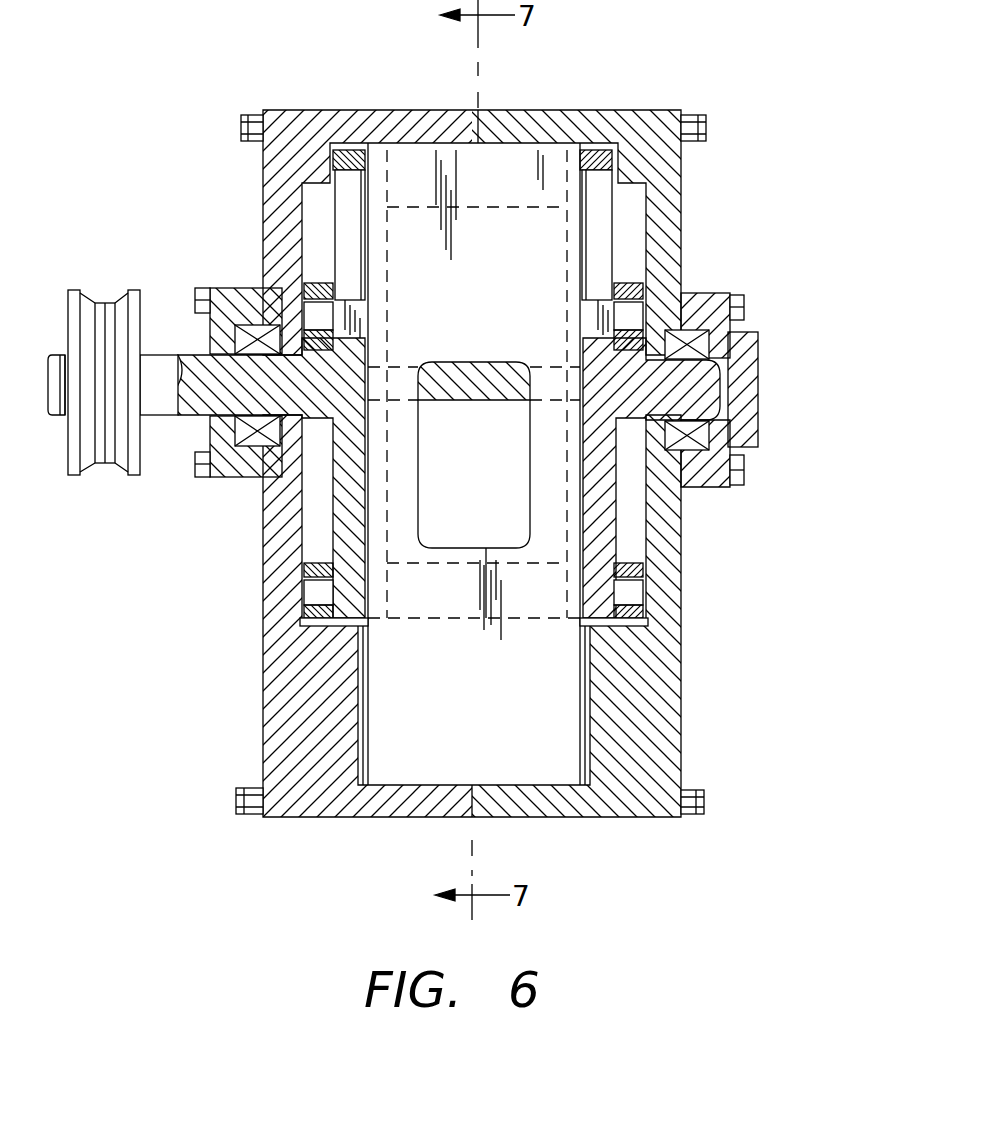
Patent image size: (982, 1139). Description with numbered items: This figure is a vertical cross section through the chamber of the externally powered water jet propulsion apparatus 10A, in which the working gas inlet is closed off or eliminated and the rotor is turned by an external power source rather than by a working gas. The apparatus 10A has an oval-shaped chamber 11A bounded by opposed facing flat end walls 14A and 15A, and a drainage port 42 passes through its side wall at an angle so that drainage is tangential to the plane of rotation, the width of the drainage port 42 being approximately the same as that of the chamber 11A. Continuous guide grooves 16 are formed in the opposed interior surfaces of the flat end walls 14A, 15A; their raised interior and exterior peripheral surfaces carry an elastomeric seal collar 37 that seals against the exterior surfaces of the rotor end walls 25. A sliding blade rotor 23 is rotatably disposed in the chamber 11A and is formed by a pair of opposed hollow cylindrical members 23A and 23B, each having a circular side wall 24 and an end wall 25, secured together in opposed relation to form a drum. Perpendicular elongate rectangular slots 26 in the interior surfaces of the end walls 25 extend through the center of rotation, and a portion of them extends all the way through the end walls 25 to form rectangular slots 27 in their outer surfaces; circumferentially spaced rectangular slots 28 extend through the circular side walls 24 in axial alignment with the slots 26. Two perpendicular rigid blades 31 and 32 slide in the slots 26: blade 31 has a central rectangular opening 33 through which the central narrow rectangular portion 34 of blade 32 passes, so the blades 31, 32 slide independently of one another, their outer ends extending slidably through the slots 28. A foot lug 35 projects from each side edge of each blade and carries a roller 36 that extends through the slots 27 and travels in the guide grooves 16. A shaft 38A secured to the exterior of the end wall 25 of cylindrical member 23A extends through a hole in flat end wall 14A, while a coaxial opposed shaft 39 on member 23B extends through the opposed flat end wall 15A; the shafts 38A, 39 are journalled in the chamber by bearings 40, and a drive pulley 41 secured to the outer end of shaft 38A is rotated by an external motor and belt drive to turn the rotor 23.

The water jet propulsion apparatus 10A is at (766, 228).
The oval-shaped chamber 11A is at (256, 716).
The flat end wall 14A is at (369, 740).
The flat end wall 15A is at (580, 720).
The continuous guide grooves 16 is at (305, 300).
The sliding blade rotor 23 is at (322, 540).
The hollow cylindrical member 23A is at (393, 626).
The hollow cylindrical member 23B is at (545, 626).
The circular side wall 24 is at (332, 158).
The end wall 25 is at (322, 518).
The elongate rectangular slots 26 is at (390, 278).
The rectangular perpendicular slots 27 is at (350, 232).
The circumferentially spaced rectangular slots 28 is at (545, 112).
The rigid blade 31 is at (472, 773).
The rigid blade 32 is at (474, 409).
The central rectangular opening 33 is at (425, 480).
The central narrow rectangular portion 34 is at (470, 386).
The foot lug 35 is at (352, 326).
The roller 36 is at (312, 316).
The elastomeric seal collar 37 is at (312, 290).
The shaft 38A is at (190, 408).
The coaxial opposed shaft 39 is at (705, 378).
The bearings 40 is at (235, 334).
The drive pulley 41 is at (102, 303).
The drainage port 42 is at (387, 110).